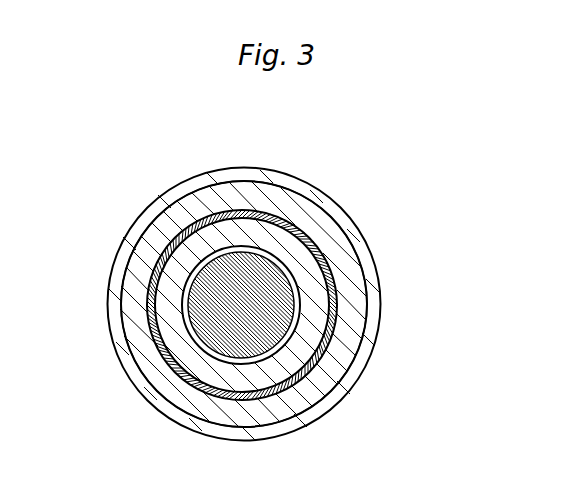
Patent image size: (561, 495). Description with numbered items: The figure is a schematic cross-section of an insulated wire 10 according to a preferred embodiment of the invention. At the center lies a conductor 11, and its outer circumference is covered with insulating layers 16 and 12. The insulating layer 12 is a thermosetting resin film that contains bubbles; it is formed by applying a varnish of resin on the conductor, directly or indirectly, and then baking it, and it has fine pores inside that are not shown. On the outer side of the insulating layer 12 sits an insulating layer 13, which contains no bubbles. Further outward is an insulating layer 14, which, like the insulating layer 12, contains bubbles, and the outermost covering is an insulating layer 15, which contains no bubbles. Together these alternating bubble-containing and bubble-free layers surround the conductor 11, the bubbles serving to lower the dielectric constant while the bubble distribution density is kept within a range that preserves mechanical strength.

The insulated wire 10 is at (127, 175).
The conductor 11 is at (288, 266).
The insulating layer containing bubbles 12 is at (287, 240).
The insulating layer containing no bubbles 13 is at (285, 213).
The insulating layer containing bubbles 14 is at (372, 292).
The insulating layer containing no bubbles 15 is at (234, 176).
The insulating layer containing no bubbles 16 is at (368, 305).